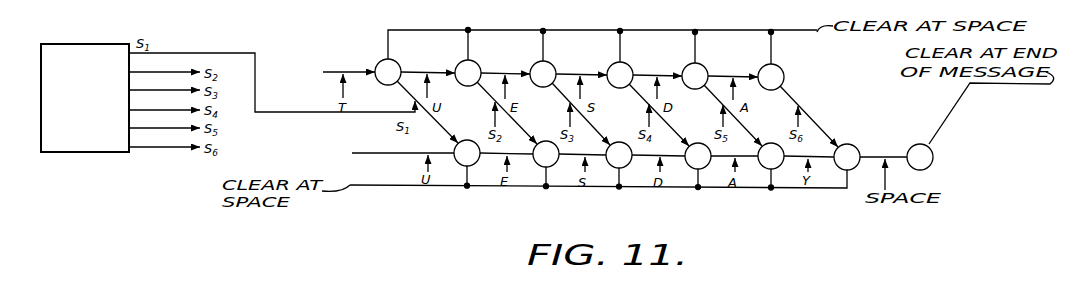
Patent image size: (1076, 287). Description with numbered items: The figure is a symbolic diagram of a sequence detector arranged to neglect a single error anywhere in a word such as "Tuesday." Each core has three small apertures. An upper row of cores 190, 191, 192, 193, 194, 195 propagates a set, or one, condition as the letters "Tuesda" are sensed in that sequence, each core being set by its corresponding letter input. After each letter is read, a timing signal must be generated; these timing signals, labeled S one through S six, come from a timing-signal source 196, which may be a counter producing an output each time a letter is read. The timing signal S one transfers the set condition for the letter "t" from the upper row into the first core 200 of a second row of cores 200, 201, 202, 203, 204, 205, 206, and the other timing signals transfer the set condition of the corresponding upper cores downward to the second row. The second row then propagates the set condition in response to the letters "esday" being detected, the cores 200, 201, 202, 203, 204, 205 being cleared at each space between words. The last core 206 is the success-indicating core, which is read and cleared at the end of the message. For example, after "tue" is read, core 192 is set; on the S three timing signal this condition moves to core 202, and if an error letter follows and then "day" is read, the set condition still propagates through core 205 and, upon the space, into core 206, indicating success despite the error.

The timing-signal source 196 is at (79, 44).
The core of upper row 190 is at (427, 52).
The core of upper row 191 is at (506, 53).
The core of upper row 192 is at (581, 54).
The core of upper row 193 is at (658, 55).
The core of upper row 194 is at (733, 56).
The core of upper row 195 is at (783, 68).
The core of second row 200 is at (459, 164).
The core of second row 201 is at (538, 165).
The core of second row 202 is at (611, 166).
The core of second row 203 is at (690, 167).
The core of second row 204 is at (763, 167).
The core of second row 205 is at (839, 168).
The success-indicating core 206 is at (933, 157).